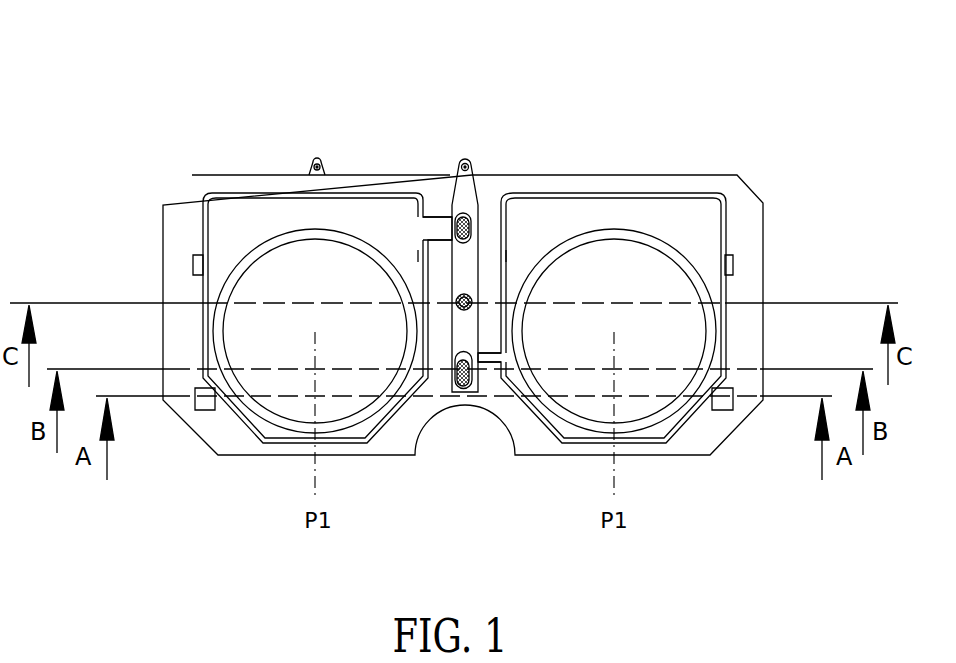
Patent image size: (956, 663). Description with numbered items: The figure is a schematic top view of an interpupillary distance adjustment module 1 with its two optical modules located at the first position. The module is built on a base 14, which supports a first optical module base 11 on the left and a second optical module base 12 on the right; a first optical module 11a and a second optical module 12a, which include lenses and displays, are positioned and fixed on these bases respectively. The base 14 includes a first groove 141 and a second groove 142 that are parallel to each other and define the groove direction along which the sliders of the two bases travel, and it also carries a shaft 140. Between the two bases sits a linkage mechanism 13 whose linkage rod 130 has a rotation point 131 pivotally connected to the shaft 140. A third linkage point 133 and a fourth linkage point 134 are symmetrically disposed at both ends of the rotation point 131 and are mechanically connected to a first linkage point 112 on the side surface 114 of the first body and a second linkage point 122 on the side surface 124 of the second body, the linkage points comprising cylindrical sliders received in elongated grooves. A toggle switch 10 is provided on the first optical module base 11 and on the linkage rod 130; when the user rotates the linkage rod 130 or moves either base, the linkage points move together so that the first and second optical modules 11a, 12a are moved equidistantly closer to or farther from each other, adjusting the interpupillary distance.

The interpupillary distance adjustment module 1 is at (253, 102).
The toggle switch 10 is at (316, 162).
The first optical module base 11 is at (243, 212).
The first optical module 11a is at (315, 331).
The second optical module base 12 is at (672, 213).
The second optical module 12a is at (614, 331).
The linkage mechanism 13 is at (487, 198).
The base 14 is at (245, 457).
The first linkage point 112 is at (463, 294).
The side surface 114 is at (420, 256).
The second linkage point 122 is at (480, 380).
The side surface 124 is at (508, 257).
The linkage rod 130 is at (483, 207).
The rotation point 131 is at (470, 300).
The third linkage point 133 is at (470, 238).
The fourth linkage point 134 is at (462, 392).
The shaft 140 is at (427, 216).
The first groove 141 is at (205, 412).
The second groove 142 is at (722, 412).